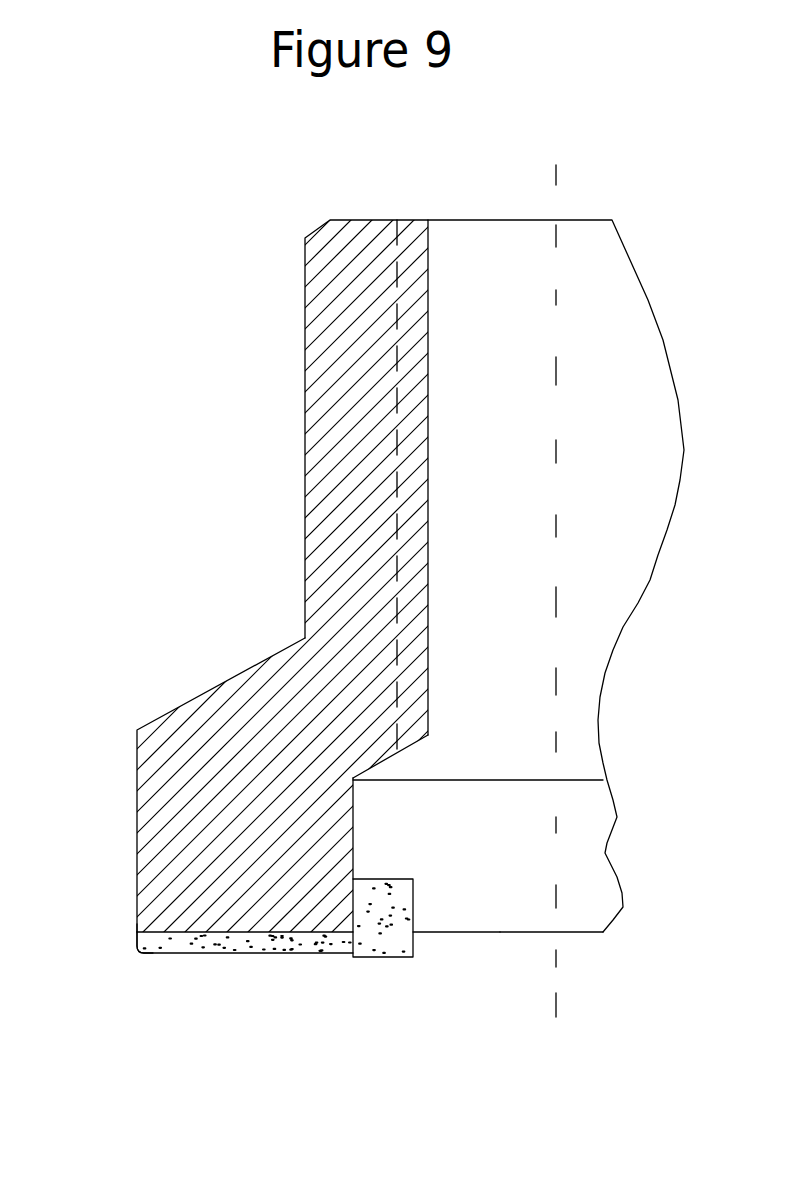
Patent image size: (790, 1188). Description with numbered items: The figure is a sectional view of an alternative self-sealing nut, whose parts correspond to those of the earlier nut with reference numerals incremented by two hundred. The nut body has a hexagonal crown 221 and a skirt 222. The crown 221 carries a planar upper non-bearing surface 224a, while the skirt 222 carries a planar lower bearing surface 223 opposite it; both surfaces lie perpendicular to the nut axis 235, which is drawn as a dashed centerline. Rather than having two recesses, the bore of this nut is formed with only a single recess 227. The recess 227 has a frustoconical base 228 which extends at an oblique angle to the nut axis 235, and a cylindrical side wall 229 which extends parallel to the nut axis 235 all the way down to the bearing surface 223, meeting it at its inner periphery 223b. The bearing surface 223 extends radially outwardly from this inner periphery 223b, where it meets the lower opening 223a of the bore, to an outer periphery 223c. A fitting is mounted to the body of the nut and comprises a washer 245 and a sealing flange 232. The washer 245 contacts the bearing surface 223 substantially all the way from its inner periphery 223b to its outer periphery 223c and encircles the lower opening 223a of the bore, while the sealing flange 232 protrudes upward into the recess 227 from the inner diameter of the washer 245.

The crown 221 is at (305, 442).
The skirt 222 is at (137, 810).
The bearing surface 223 is at (258, 934).
The lower opening 223a is at (518, 920).
The inner periphery 223b is at (353, 933).
The outer periphery 223c is at (135, 932).
The non-bearing surface 224a is at (495, 245).
The recess 227 is at (405, 843).
The frustoconical base 228 is at (388, 760).
The cylindrical side wall 229 is at (353, 863).
The sealing flange 232 is at (403, 913).
The nut axis 235 is at (556, 176).
The washer 245 is at (202, 957).